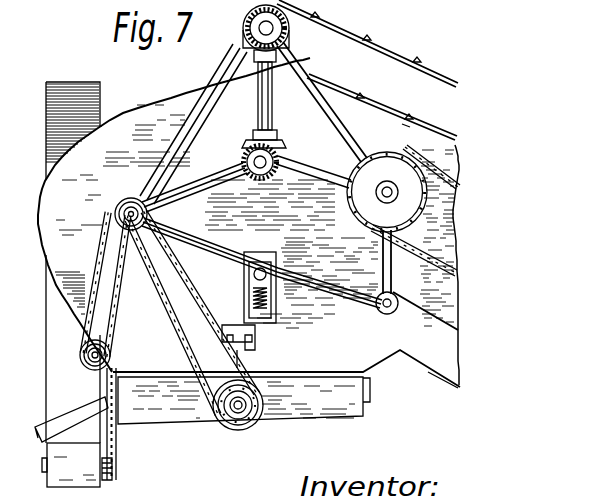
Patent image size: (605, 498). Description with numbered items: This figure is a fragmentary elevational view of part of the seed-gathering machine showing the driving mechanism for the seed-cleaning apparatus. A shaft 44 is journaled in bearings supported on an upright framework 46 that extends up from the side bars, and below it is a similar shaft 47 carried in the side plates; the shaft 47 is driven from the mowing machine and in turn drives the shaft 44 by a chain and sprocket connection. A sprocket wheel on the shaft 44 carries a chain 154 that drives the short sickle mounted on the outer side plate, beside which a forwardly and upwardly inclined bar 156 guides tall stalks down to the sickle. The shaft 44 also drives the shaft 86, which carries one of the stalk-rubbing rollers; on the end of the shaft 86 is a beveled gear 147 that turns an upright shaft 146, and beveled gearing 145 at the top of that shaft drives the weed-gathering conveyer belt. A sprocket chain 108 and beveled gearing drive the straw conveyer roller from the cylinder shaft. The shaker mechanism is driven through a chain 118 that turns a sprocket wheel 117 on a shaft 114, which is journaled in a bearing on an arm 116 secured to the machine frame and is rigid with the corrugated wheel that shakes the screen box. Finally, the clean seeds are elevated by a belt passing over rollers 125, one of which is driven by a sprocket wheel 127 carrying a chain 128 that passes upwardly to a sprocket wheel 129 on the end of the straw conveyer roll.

The beveled gearing 145 is at (283, 36).
The upright shaft 146 is at (270, 103).
The shaft 86 is at (279, 158).
The beveled gear 147 is at (265, 181).
The shaft 44 is at (387, 185).
The inclined bar 156 is at (407, 178).
The chain 154 is at (424, 250).
The framework 46 is at (383, 252).
The shaft 47 is at (396, 311).
The sprocket chain 108 is at (104, 259).
The sprocket wheel 129 is at (112, 345).
The chain 118 is at (196, 355).
The sprocket wheel 117 is at (216, 399).
The arm 116 is at (257, 347).
The shaft 114 is at (260, 400).
The chain 128 is at (118, 441).
The sprocket wheel 127 is at (120, 467).
The rollers 125 is at (105, 480).